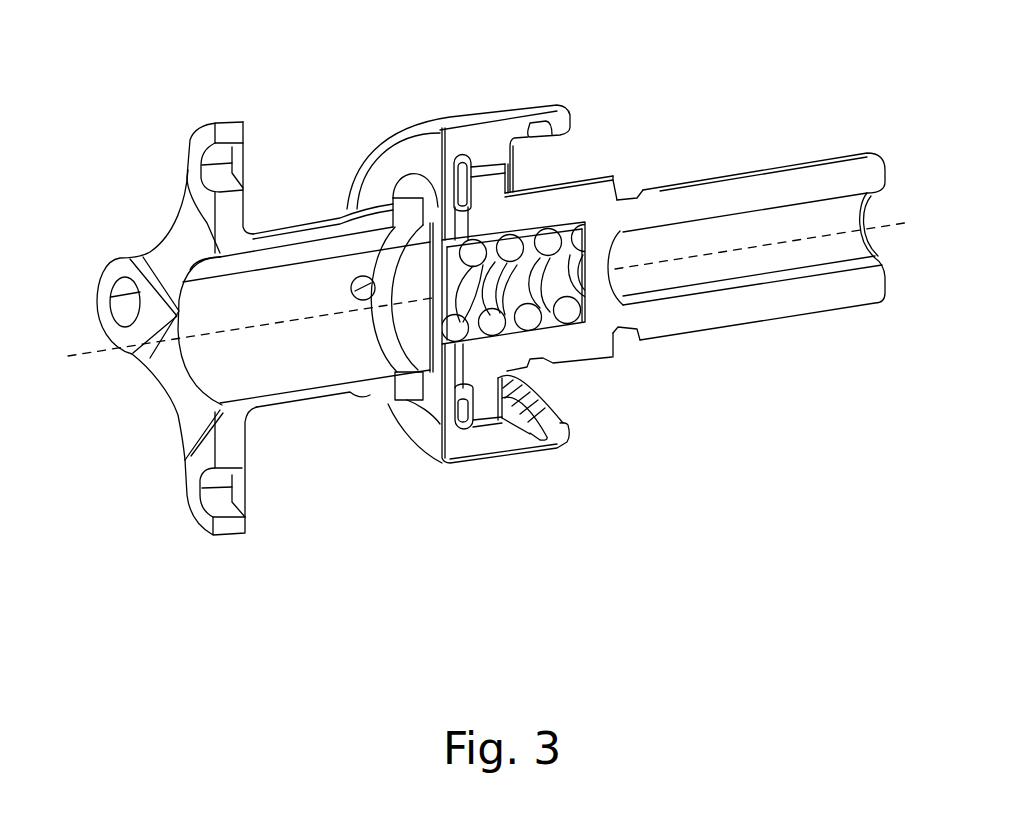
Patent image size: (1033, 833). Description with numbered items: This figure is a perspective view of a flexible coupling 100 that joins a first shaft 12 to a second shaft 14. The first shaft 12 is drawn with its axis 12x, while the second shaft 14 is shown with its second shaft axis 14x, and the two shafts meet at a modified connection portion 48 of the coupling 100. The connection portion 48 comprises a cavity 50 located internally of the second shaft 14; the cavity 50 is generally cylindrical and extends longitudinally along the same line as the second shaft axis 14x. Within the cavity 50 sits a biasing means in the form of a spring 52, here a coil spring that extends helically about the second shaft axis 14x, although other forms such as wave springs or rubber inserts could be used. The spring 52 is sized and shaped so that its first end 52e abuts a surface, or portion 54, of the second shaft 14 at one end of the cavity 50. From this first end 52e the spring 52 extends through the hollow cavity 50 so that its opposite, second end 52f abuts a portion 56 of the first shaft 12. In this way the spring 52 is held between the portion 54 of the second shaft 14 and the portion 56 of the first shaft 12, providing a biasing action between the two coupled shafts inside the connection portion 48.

The flexible coupling 100 is at (586, 56).
The first shaft 12 is at (293, 233).
The longitudinal axis of first connector 12x is at (233, 331).
The second shaft 14 is at (768, 174).
The second shaft axis 14x is at (781, 239).
The connection portion 48 is at (583, 350).
The cavity 50 is at (527, 205).
The spring 52 is at (505, 112).
The first end of the spring 52e is at (594, 230).
The second end of the spring 52f is at (398, 402).
The portion of the second shaft 54 is at (623, 237).
The portion of the first shaft 56 is at (450, 326).